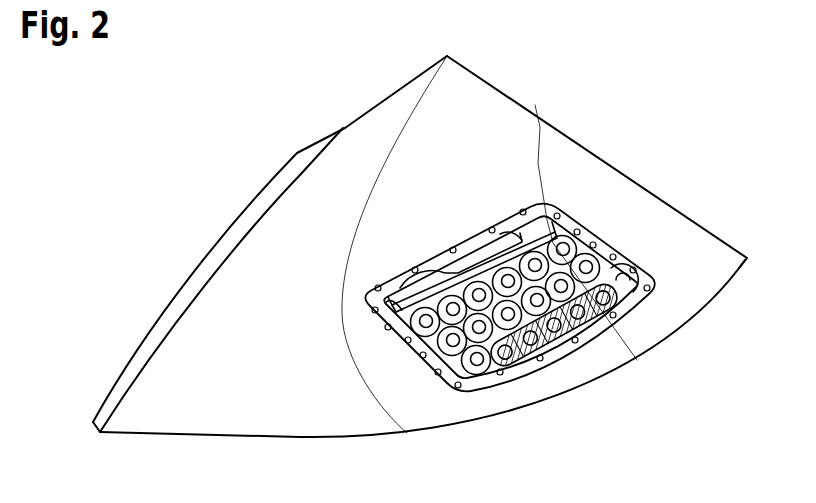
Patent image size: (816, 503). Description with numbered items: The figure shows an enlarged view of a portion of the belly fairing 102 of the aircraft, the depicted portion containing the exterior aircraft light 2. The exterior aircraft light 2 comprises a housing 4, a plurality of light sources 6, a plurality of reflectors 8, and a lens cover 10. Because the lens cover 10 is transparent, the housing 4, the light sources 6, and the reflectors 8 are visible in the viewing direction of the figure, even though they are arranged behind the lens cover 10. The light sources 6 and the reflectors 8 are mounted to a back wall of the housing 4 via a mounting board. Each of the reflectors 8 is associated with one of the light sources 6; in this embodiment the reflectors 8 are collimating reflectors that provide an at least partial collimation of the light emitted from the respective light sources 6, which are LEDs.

The exterior aircraft light 2 is at (546, 247).
The housing 4 is at (520, 223).
The light sources 6 is at (624, 278).
The reflectors 8 is at (420, 343).
The lens cover 10 is at (628, 303).
The belly fairing 102 is at (535, 105).